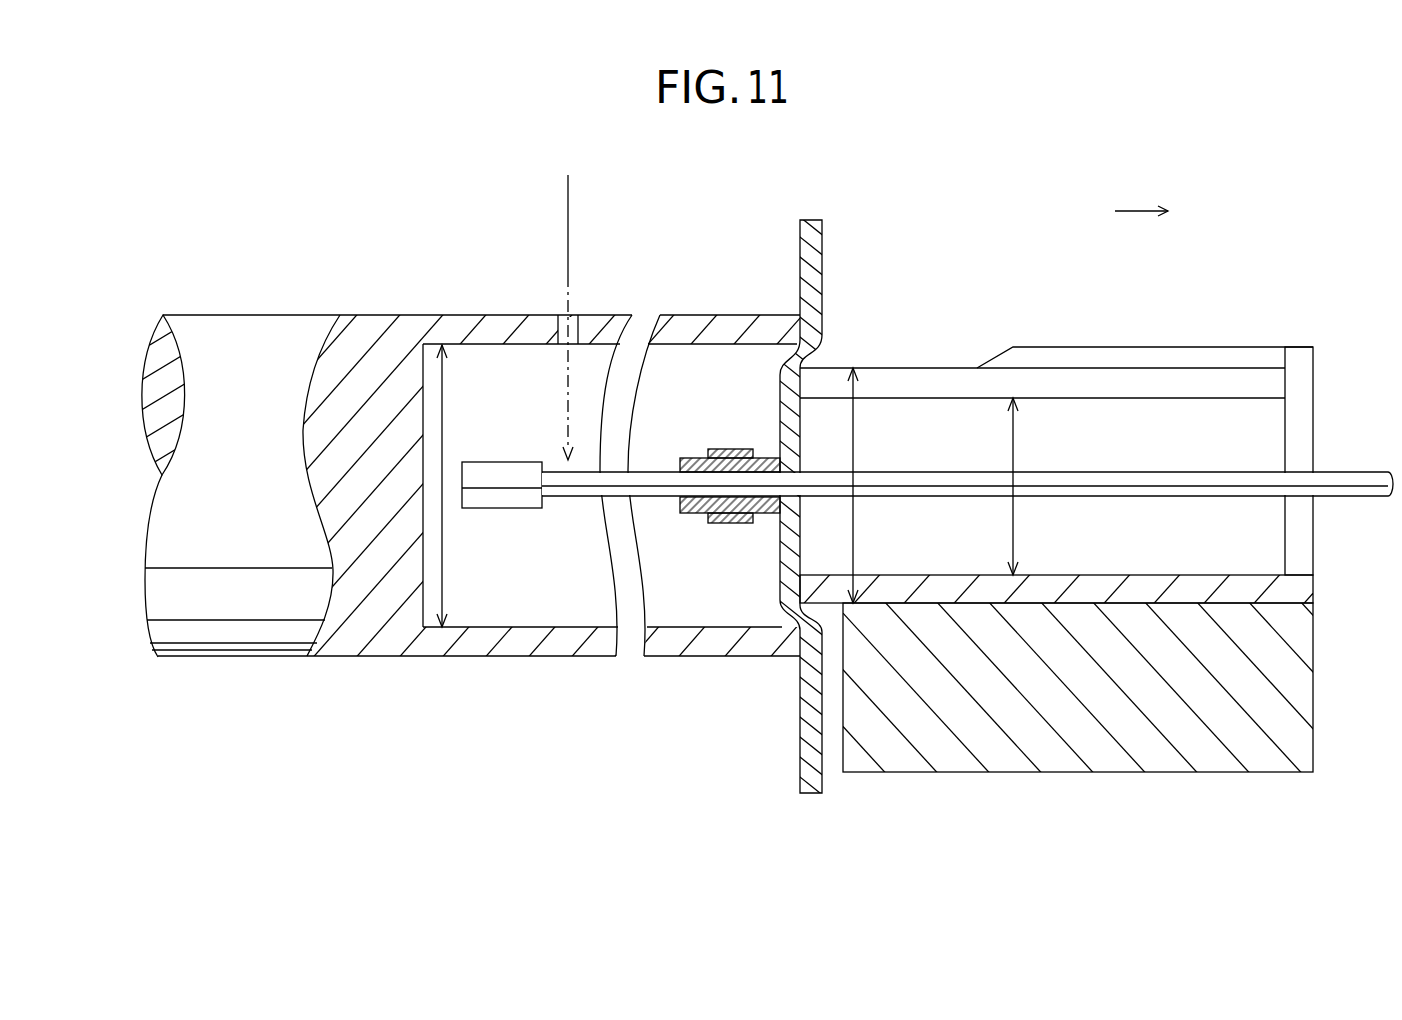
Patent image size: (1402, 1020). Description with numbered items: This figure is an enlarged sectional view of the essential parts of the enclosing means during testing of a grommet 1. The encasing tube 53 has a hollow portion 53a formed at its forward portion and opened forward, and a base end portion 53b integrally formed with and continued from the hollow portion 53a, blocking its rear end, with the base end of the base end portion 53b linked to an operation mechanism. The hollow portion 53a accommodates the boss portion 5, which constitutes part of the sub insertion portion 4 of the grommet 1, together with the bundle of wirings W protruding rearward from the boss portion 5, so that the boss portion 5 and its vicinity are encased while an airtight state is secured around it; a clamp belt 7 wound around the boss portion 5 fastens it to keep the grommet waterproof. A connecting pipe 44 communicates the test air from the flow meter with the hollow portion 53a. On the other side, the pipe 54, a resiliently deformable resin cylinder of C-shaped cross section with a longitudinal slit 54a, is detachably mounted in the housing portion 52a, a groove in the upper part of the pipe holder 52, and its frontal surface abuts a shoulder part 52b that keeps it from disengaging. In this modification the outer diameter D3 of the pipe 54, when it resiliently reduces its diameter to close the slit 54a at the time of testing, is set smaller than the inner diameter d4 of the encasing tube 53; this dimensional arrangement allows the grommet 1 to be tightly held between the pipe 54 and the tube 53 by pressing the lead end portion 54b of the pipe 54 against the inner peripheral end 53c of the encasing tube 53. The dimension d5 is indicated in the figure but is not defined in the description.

The grommet 1 is at (816, 262).
The sub insertion portion 4 is at (700, 517).
The boss portion 5 is at (727, 427).
The clamp belt 7 is at (735, 525).
The connecting pipe 44 is at (568, 232).
The pipe holder 52 is at (1038, 555).
The housing portion 52a is at (1128, 357).
The shoulder part 52b is at (1286, 540).
The encasing tube 53 is at (464, 525).
The hollow portion 53a is at (456, 645).
The base end portion 53b is at (273, 638).
The inner peripheral end 53c is at (785, 352).
The pipe 54 is at (1066, 419).
The slit 54a is at (920, 373).
The lead end portion 54b is at (813, 362).
The wirings W is at (1130, 478).
The inner diameter of the encasing tube d4 is at (445, 440).
The outer diameter of the pipe D3 is at (856, 450).
The inner diameter d5 is at (1017, 447).